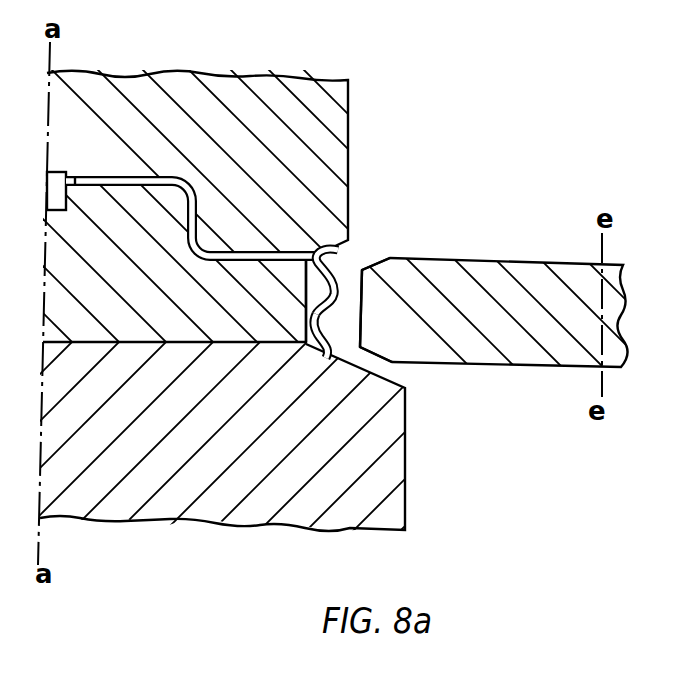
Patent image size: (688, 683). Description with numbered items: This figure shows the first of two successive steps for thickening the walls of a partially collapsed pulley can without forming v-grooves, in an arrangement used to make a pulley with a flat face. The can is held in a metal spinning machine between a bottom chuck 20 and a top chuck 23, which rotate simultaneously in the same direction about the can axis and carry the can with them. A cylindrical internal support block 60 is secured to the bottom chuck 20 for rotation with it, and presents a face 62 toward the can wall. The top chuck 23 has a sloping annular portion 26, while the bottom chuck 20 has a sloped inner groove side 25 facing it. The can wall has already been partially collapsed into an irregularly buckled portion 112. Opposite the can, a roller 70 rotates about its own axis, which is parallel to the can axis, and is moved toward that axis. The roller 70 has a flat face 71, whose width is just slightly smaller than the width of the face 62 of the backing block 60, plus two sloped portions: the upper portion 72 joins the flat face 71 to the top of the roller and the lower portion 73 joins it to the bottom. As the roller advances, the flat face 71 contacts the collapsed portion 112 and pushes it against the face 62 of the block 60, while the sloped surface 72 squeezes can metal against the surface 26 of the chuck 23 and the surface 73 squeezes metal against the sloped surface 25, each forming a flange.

The top chuck 23 is at (215, 137).
The internal support block 60 is at (142, 285).
The face of backing block 62 is at (303, 302).
The bottom chuck 20 is at (219, 448).
The sloping annular portion 26 is at (317, 252).
The buckled portion of can wall 112 is at (340, 275).
The sloped inner side of groove 25 is at (330, 360).
The roller 70 is at (545, 325).
The flat face 71 is at (363, 307).
The upper sloped portion 72 is at (392, 257).
The lower sloped portion 73 is at (392, 362).